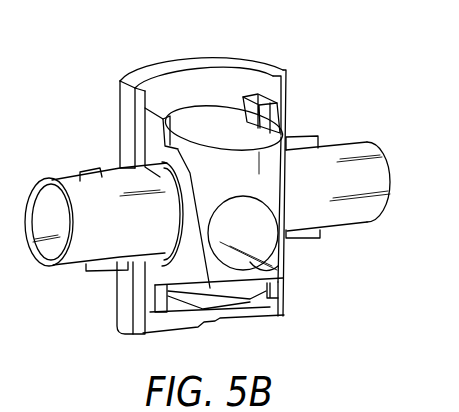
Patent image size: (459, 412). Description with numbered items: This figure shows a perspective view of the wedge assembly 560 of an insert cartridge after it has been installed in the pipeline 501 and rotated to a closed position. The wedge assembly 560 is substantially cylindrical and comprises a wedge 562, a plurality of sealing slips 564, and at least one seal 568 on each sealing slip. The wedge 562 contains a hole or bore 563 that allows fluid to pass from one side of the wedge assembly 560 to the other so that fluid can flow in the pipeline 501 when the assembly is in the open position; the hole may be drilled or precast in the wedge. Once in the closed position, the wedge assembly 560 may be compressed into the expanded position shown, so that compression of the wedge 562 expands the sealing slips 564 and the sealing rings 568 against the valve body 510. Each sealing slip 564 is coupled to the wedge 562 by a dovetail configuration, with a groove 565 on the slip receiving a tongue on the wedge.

The pipeline 501 is at (385, 220).
The valve body 510 is at (118, 151).
The wedge assembly 560 is at (321, 103).
The wedge 562 is at (193, 120).
The hole or bore 563 is at (268, 270).
The sealing slip 564 is at (147, 299).
The groove 565 is at (258, 95).
The seal 568 is at (175, 316).